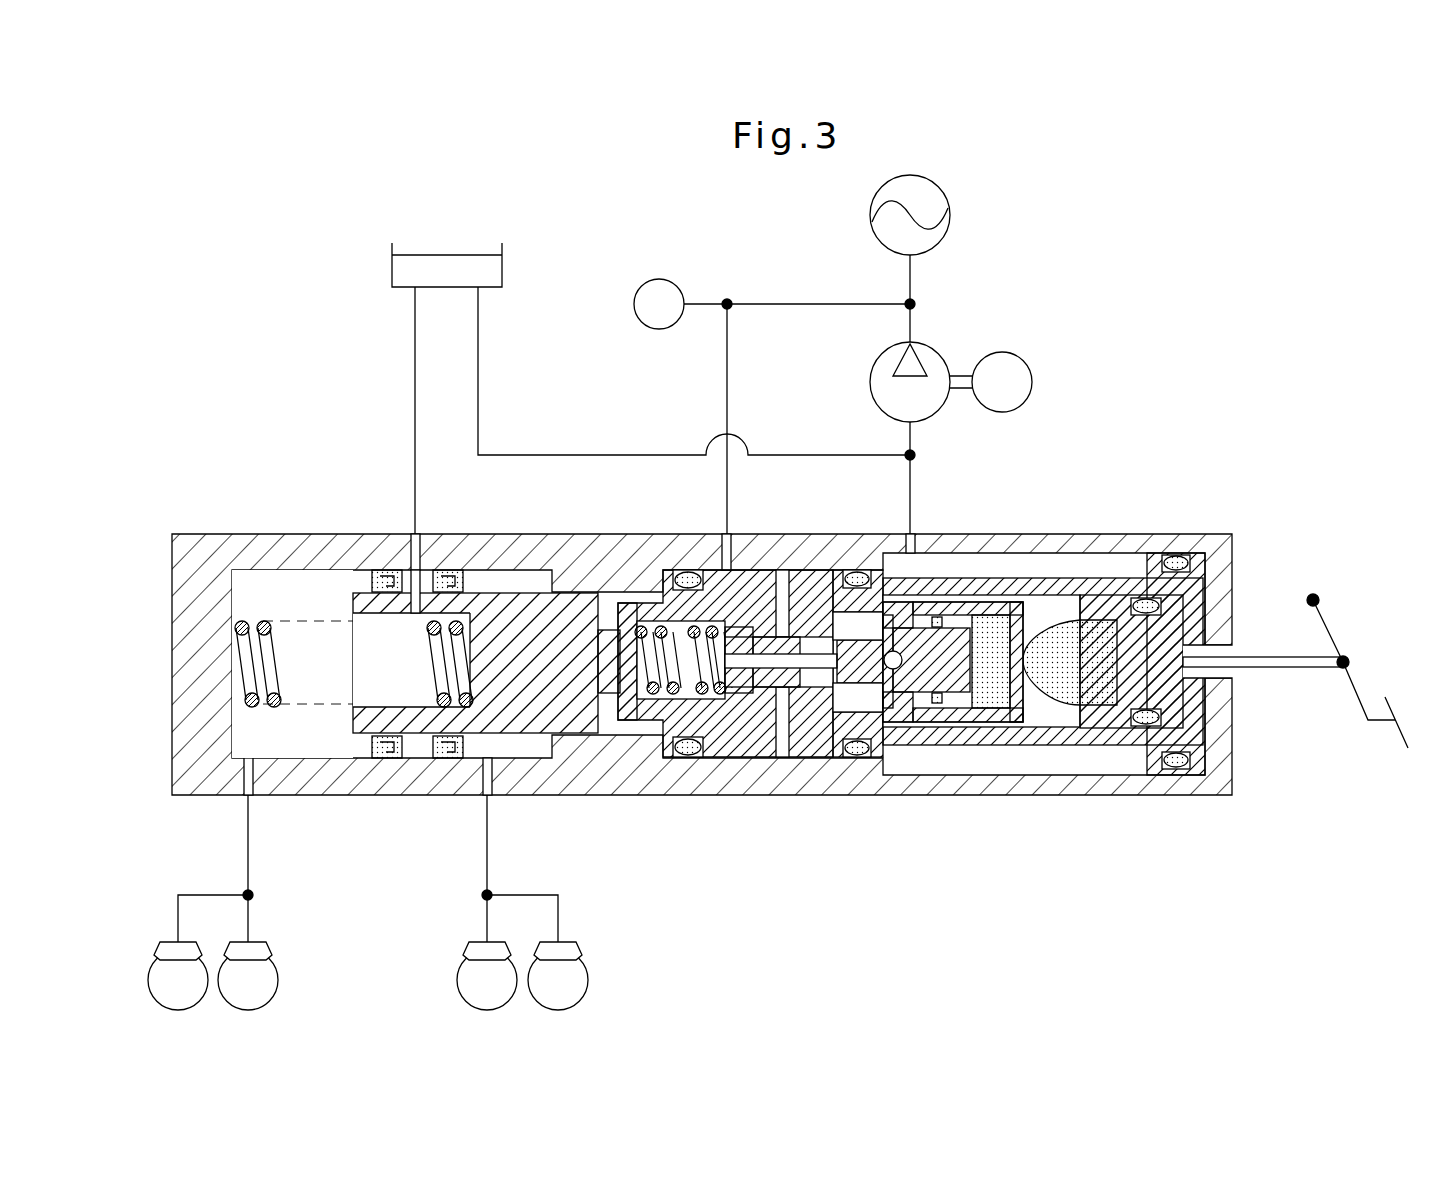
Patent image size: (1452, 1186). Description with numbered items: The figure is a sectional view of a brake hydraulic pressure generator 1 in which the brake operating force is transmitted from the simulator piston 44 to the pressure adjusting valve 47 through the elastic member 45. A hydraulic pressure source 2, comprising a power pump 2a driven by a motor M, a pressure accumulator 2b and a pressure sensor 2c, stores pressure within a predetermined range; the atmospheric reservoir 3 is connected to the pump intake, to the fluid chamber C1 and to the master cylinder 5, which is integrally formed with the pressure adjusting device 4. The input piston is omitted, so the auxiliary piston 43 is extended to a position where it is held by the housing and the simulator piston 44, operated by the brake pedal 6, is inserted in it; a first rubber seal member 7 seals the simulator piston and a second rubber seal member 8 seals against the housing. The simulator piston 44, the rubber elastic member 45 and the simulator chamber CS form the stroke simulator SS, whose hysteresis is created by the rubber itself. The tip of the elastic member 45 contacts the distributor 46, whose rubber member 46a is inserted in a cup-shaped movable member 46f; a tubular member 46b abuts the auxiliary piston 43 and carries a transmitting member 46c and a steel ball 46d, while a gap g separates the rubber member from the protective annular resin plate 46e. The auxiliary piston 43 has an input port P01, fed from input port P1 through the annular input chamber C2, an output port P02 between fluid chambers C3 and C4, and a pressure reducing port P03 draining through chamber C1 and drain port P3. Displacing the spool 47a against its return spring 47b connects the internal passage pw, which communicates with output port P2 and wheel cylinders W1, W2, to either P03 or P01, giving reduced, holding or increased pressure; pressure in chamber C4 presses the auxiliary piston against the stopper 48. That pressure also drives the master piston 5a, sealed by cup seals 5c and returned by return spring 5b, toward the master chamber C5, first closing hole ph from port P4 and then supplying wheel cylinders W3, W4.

The brake hydraulic pressure generator 1 is at (1073, 440).
The hydraulic pressure source 2 is at (950, 281).
The power pump 2a is at (940, 358).
The pressure accumulator 2b is at (928, 200).
The pressure sensor 2c is at (662, 279).
The atmospheric reservoir 3 is at (495, 265).
The pressure adjusting device 4 is at (990, 534).
The master cylinder 5 is at (327, 522).
The master piston 5a is at (512, 598).
The return spring 5b is at (194, 796).
The cup seals 5c is at (390, 760).
The brake pedal 6 is at (1400, 720).
The first rubber seal member 7 is at (1200, 580).
The second rubber seal member 8 is at (1200, 780).
The auxiliary piston 43 is at (684, 735).
The simulator piston 44 is at (1205, 656).
The elastic member 45 is at (1105, 600).
The distributor 46 is at (957, 748).
The rubber member 46a is at (996, 705).
The tubular member 46b is at (880, 706).
The transmitting member 46c is at (935, 694).
The steel ball 46d is at (903, 690).
The annular resin plate 46e is at (978, 706).
The movable member 46f is at (1018, 733).
The pressure adjusting valve 47 is at (783, 700).
The spool 47a is at (688, 570).
The return spring 47b is at (628, 712).
The stopper 48 is at (885, 590).
The fluid chamber C1 is at (1045, 612).
The annular input chamber C2 is at (815, 645).
The fluid chamber C3 is at (645, 692).
The fluid chamber C4 is at (575, 580).
The master chamber C5 is at (268, 580).
The simulator chamber CS is at (1075, 650).
The stroke simulator SS is at (1105, 722).
The input port P1 is at (722, 534).
The output port P2 is at (485, 792).
The drain port P3 is at (918, 536).
The port P4 is at (410, 534).
The input port P01 is at (781, 592).
The output port P02 is at (630, 596).
The pressure reducing port P03 is at (850, 600).
The hole ph is at (421, 565).
The internal passage pw is at (748, 690).
The gap g is at (1021, 759).
The motor M is at (991, 382).
The wheel cylinder W1 is at (479, 946).
The wheel cylinder W2 is at (565, 946).
The wheel cylinder W3 is at (170, 946).
The wheel cylinder W4 is at (258, 946).